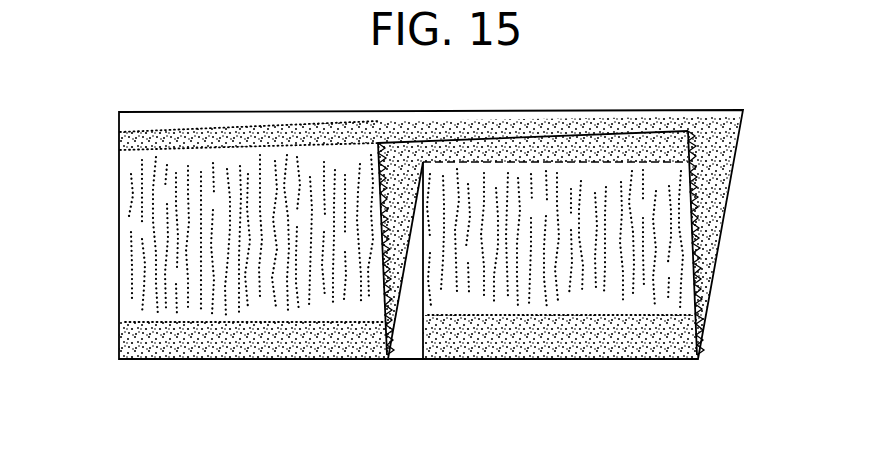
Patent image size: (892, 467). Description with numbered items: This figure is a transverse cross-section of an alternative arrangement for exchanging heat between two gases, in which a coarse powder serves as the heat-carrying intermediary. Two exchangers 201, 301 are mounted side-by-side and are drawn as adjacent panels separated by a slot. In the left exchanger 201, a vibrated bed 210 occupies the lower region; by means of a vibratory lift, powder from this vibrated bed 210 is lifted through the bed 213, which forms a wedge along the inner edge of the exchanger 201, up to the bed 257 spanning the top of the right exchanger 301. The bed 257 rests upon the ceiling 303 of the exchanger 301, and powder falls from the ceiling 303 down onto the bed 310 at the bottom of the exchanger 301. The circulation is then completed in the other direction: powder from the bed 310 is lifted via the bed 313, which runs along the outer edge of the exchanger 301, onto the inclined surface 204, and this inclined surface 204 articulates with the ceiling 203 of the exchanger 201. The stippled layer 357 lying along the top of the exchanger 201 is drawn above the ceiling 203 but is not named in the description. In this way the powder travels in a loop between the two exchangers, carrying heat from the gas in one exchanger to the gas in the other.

The exchanger 201 is at (400, 372).
The exchanger 301 is at (712, 372).
The upper stipple layer 357 is at (338, 135).
The inclined surface 204 is at (553, 135).
The bed 257 is at (522, 160).
The bed 213 is at (403, 163).
The bed 313 is at (712, 167).
The ceiling 203 is at (170, 153).
The ceiling 303 is at (612, 175).
The vibrated bed 210 is at (152, 335).
The bed 310 is at (667, 345).